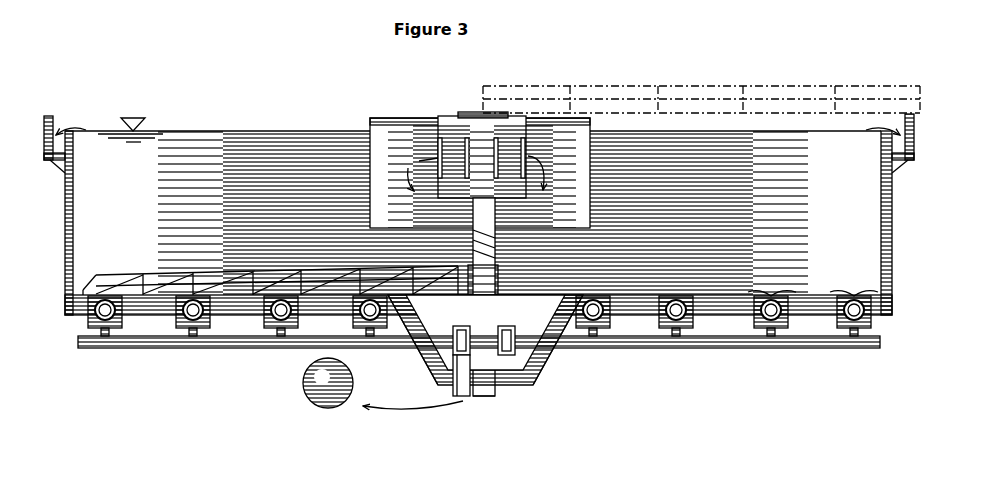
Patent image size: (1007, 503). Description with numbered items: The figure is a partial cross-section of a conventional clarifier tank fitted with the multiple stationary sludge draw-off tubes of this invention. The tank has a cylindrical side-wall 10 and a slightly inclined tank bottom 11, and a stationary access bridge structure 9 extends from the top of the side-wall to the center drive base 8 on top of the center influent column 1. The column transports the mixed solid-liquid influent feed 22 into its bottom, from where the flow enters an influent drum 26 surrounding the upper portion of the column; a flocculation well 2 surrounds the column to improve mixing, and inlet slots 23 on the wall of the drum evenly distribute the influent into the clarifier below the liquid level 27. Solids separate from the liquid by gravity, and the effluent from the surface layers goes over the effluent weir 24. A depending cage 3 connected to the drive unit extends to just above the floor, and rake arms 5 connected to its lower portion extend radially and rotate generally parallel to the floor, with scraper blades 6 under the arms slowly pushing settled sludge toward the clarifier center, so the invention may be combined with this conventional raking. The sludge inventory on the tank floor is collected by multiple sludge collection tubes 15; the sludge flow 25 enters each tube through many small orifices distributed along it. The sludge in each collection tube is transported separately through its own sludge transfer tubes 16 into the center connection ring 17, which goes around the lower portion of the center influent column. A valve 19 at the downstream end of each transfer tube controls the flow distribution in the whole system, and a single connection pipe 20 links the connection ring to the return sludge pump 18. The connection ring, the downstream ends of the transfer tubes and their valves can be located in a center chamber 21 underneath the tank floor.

The center influent column 1 is at (505, 372).
The flocculation well 2 is at (370, 110).
The cage 3 is at (525, 246).
The rake arms 5 is at (262, 262).
The scraper blades 6 is at (207, 262).
The center drive base 8 is at (460, 104).
The access bridge structure 9 is at (783, 90).
The tank side-wall 10 is at (884, 229).
The tank bottom 11 is at (876, 307).
The sludge collection tubes 15 is at (360, 314).
The sludge transfer tubes 16 is at (800, 342).
The center connection ring 17 is at (542, 362).
The return sludge pump 18 is at (383, 400).
The valve 19 is at (418, 352).
The connection pipe 20 is at (462, 390).
The center chamber 21 is at (540, 345).
The influent feed 22 is at (477, 373).
The inlet slots 23 is at (471, 164).
The effluent weir 24 is at (60, 120).
The sludge flow 25 is at (813, 305).
The influent drum 26 is at (490, 104).
The liquid level 27 is at (186, 122).